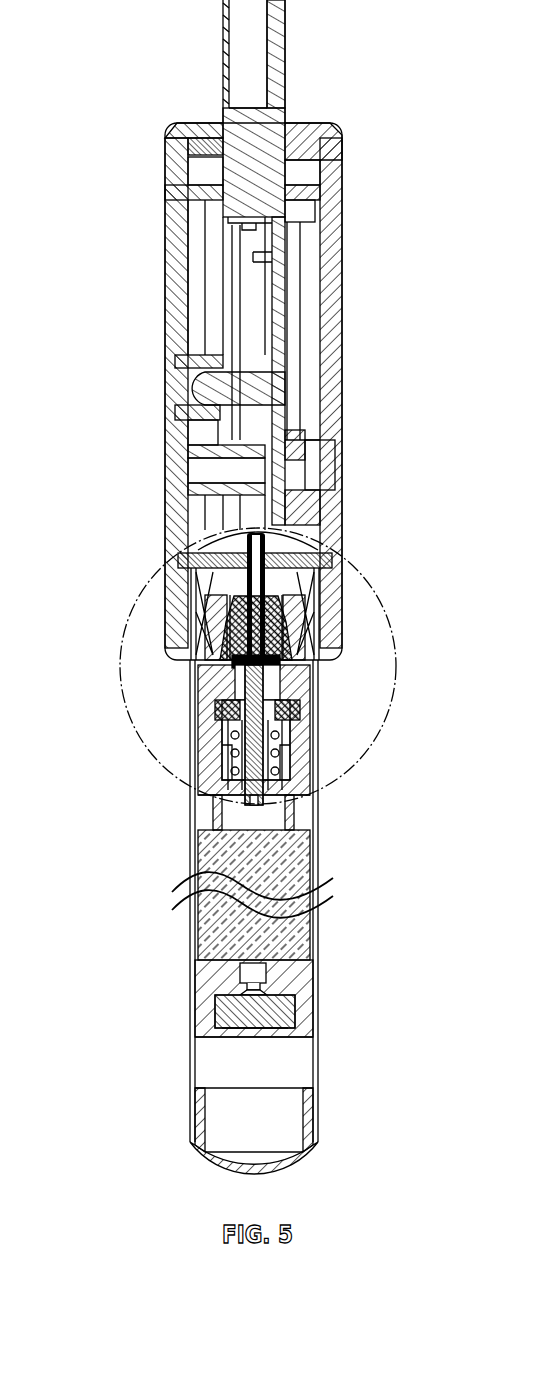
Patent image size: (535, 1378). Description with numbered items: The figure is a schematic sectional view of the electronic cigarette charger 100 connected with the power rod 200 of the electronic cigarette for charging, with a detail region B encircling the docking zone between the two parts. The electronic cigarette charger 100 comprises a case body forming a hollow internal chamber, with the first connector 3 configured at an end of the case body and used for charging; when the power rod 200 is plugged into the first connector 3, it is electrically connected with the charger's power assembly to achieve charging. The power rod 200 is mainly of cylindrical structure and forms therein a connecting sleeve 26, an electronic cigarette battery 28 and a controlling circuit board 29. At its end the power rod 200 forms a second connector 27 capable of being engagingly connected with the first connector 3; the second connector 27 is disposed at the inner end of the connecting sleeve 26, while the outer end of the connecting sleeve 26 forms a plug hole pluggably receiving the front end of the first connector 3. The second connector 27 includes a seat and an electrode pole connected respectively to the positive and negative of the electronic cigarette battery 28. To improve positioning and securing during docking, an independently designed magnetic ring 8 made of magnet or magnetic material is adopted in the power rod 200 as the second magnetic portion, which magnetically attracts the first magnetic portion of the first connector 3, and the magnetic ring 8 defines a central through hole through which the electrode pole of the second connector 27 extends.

The electronic cigarette charger 100 is at (176, 277).
The power rod 200 is at (78, 645).
The first connector 3 is at (195, 592).
The connecting sleeve 26 is at (170, 636).
The magnetic ring 8 is at (200, 678).
The second connector 27 is at (200, 722).
The electronic cigarette battery 28 is at (225, 918).
The controlling circuit board 29 is at (225, 998).
The detail region B is at (355, 555).